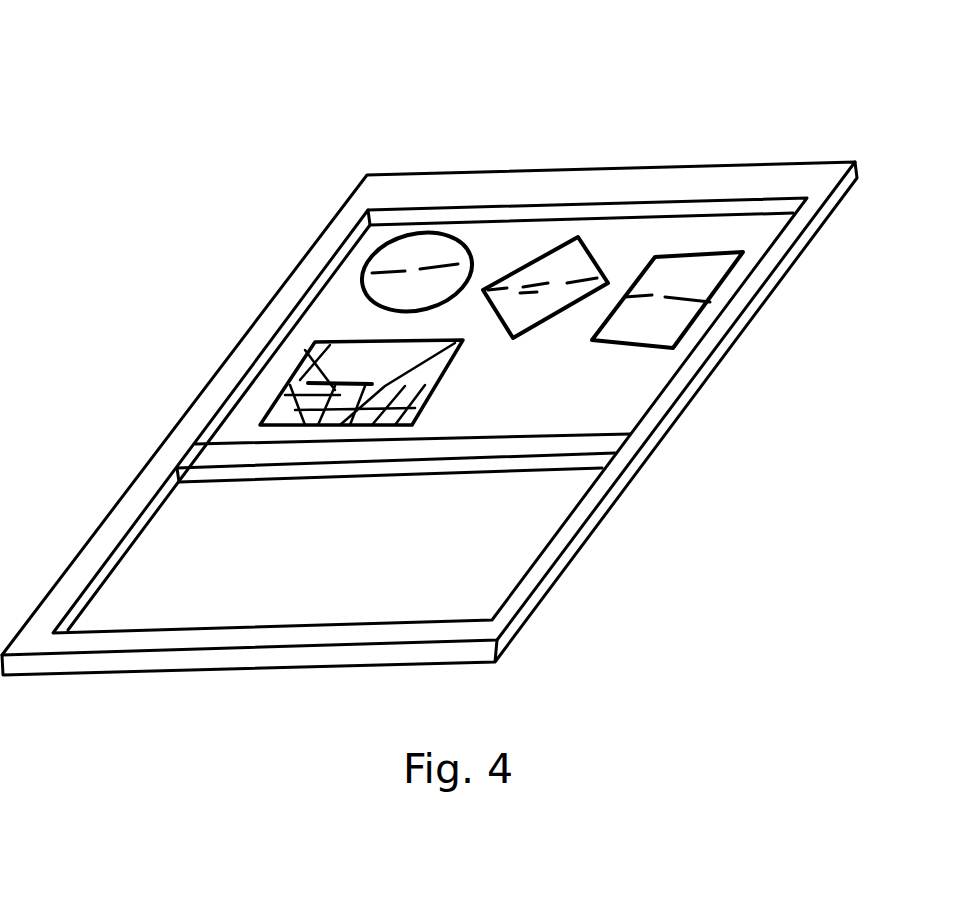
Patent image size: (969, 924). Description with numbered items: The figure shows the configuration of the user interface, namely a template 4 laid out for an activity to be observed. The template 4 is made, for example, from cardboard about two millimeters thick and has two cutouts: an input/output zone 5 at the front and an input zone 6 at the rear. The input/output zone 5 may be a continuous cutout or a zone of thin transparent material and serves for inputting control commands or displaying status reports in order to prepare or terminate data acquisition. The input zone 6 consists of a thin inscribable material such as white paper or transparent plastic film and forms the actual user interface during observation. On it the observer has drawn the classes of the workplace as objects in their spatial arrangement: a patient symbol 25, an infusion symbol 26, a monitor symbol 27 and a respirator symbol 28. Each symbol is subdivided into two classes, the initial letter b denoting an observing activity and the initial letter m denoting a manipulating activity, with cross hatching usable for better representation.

The template 4 is at (182, 447).
The input/output zone 5 is at (268, 547).
The input zone 6 is at (335, 322).
The patient symbol 25 is at (357, 342).
The infusion symbol 26 is at (450, 257).
The monitor symbol 27 is at (583, 258).
The respirator symbol 28 is at (663, 273).